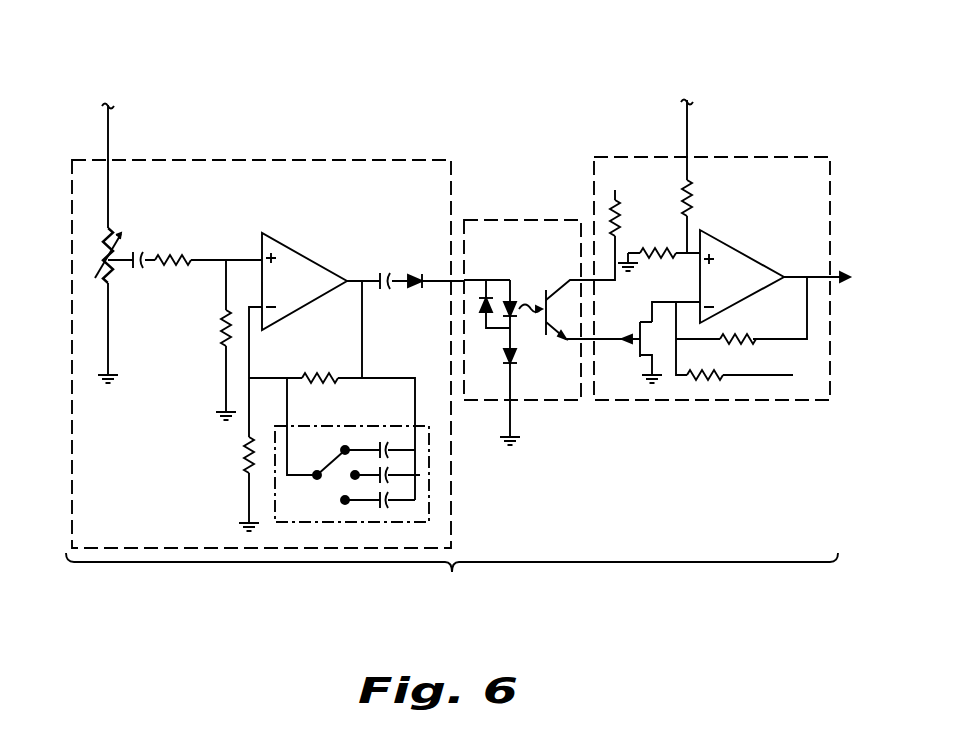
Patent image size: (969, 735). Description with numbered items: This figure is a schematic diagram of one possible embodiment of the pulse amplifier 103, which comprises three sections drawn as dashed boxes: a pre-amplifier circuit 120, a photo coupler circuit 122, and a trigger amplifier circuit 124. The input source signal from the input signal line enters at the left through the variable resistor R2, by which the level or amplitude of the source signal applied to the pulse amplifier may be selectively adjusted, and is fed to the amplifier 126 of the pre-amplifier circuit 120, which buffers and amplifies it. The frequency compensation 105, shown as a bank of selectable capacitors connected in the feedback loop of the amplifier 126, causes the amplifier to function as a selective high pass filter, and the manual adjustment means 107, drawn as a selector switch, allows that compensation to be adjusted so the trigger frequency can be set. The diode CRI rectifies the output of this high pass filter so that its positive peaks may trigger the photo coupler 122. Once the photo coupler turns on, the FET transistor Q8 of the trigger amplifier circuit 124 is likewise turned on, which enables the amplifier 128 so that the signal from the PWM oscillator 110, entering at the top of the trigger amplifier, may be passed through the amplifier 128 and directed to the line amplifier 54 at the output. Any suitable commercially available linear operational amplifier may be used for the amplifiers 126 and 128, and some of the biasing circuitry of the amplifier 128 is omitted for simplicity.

The pulse amplifier 103 is at (452, 580).
The pre-amplifier circuit 120 is at (367, 160).
The amplifier 126 is at (300, 253).
The frequency compensation means 105 is at (353, 522).
The manual adjustment means 107 is at (337, 457).
The photo coupler circuit 122 is at (505, 220).
The trigger amplifier circuit 124 is at (725, 157).
The amplifier 128 is at (749, 297).
The PWM oscillator 110 is at (684, 145).
The line amplifier 54 is at (838, 274).
The variable resistor R2 is at (98, 255).
The diode CRI is at (423, 269).
The FET transistor Q8 is at (654, 352).